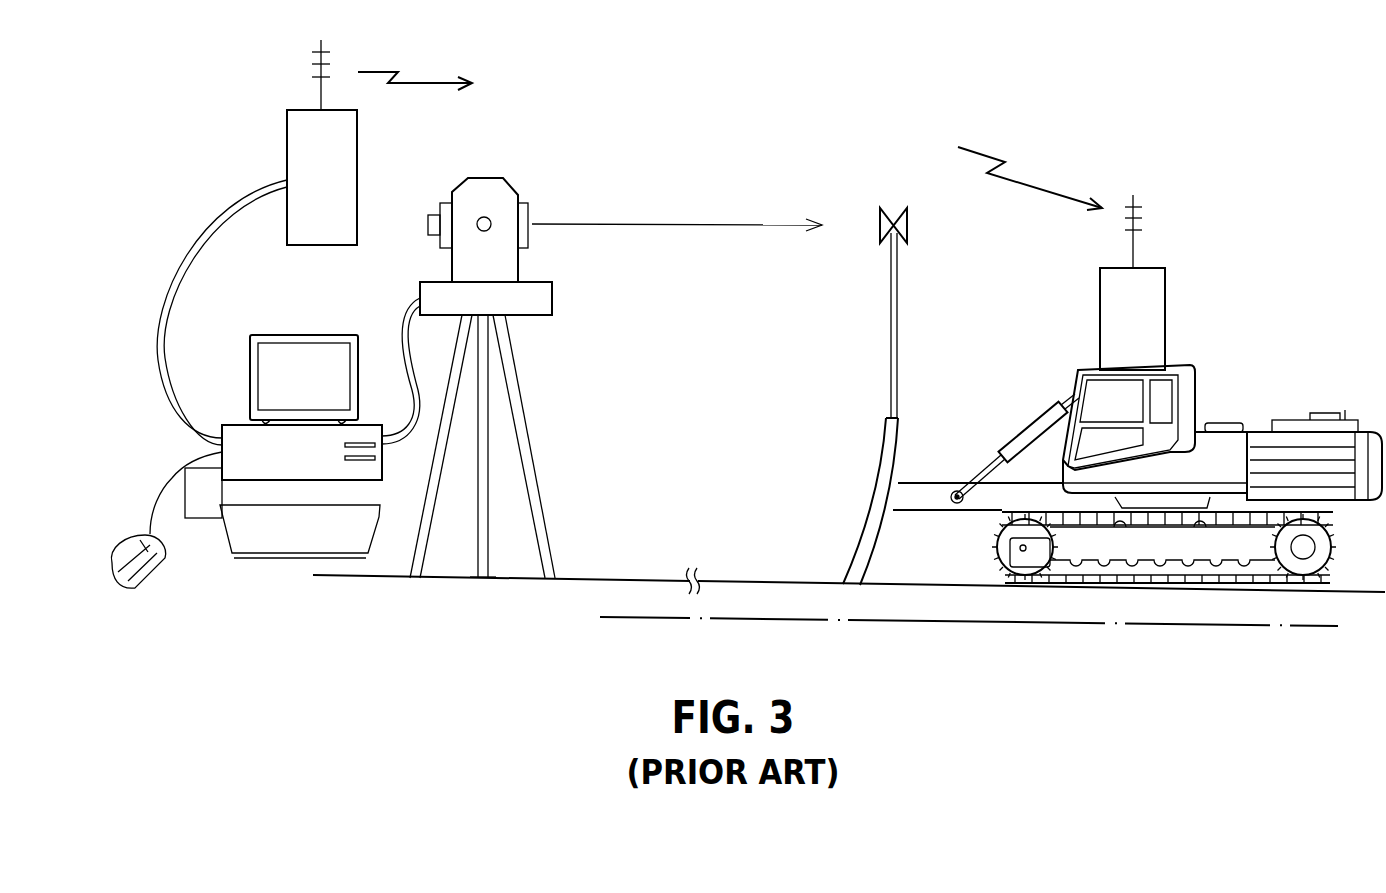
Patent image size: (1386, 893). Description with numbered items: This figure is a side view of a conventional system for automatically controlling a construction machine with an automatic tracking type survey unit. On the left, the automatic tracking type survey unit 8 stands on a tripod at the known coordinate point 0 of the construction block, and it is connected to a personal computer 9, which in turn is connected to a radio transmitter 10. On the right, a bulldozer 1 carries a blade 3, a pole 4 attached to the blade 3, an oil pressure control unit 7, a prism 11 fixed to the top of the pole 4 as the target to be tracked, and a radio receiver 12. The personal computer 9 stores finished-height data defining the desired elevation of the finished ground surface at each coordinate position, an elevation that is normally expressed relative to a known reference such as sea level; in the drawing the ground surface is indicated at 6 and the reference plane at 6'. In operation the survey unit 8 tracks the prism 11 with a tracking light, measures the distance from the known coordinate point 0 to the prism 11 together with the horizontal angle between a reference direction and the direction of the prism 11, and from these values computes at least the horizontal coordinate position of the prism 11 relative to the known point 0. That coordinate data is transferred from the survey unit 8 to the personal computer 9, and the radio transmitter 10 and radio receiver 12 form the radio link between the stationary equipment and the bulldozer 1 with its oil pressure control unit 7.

The bulldozer 1 is at (1231, 414).
The blade 3 is at (873, 500).
The pole 4 is at (897, 377).
The reference plane line 6 is at (968, 568).
The ground surface 6' is at (849, 552).
The oil pressure control unit 7 is at (1020, 440).
The automatic tracking type survey unit 8 is at (536, 189).
The personal computer 9 is at (295, 465).
The radio transmitter 10 is at (297, 147).
The prism 11 is at (912, 224).
The radio receiver 12 is at (1165, 298).
The known coordinate point 0 is at (480, 580).